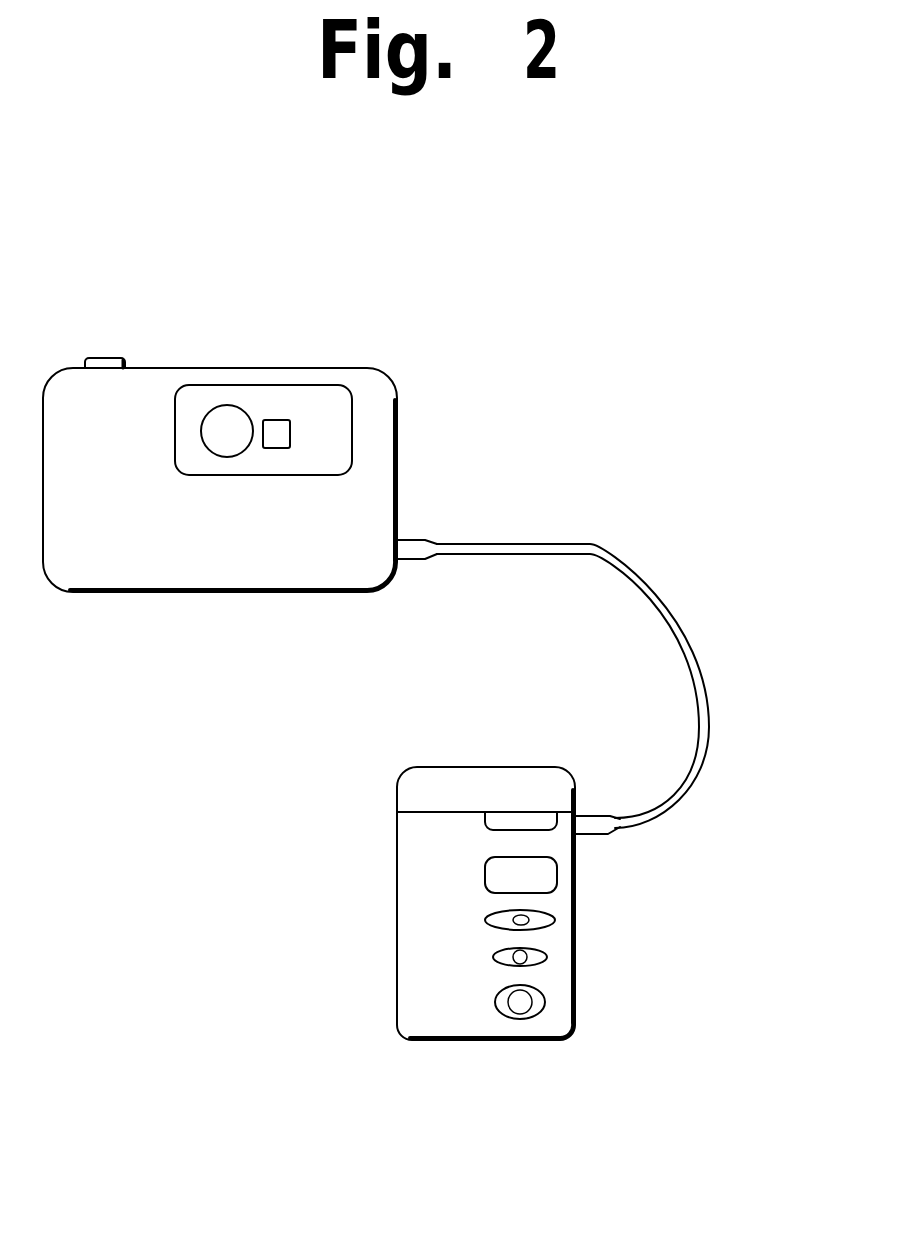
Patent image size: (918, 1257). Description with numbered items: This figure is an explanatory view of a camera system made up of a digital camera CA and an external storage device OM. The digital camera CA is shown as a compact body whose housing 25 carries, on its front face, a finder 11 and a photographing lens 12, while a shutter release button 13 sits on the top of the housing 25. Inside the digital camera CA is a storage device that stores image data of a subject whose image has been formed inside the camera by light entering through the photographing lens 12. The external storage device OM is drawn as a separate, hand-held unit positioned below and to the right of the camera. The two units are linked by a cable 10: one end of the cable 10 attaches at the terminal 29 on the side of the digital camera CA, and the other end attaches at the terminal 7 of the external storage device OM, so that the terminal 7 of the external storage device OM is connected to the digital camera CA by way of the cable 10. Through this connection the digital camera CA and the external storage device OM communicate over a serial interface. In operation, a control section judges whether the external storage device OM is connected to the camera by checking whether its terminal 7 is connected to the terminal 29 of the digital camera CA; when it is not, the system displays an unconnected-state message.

The shutter release button 13 is at (102, 358).
The photographing lens 12 is at (228, 412).
The finder 11 is at (280, 432).
The terminal 29 is at (420, 542).
The housing 25 is at (86, 584).
The cable 10 is at (709, 770).
The terminal 7 is at (584, 828).
The digital camera CA is at (315, 472).
The external storage device OM is at (602, 927).